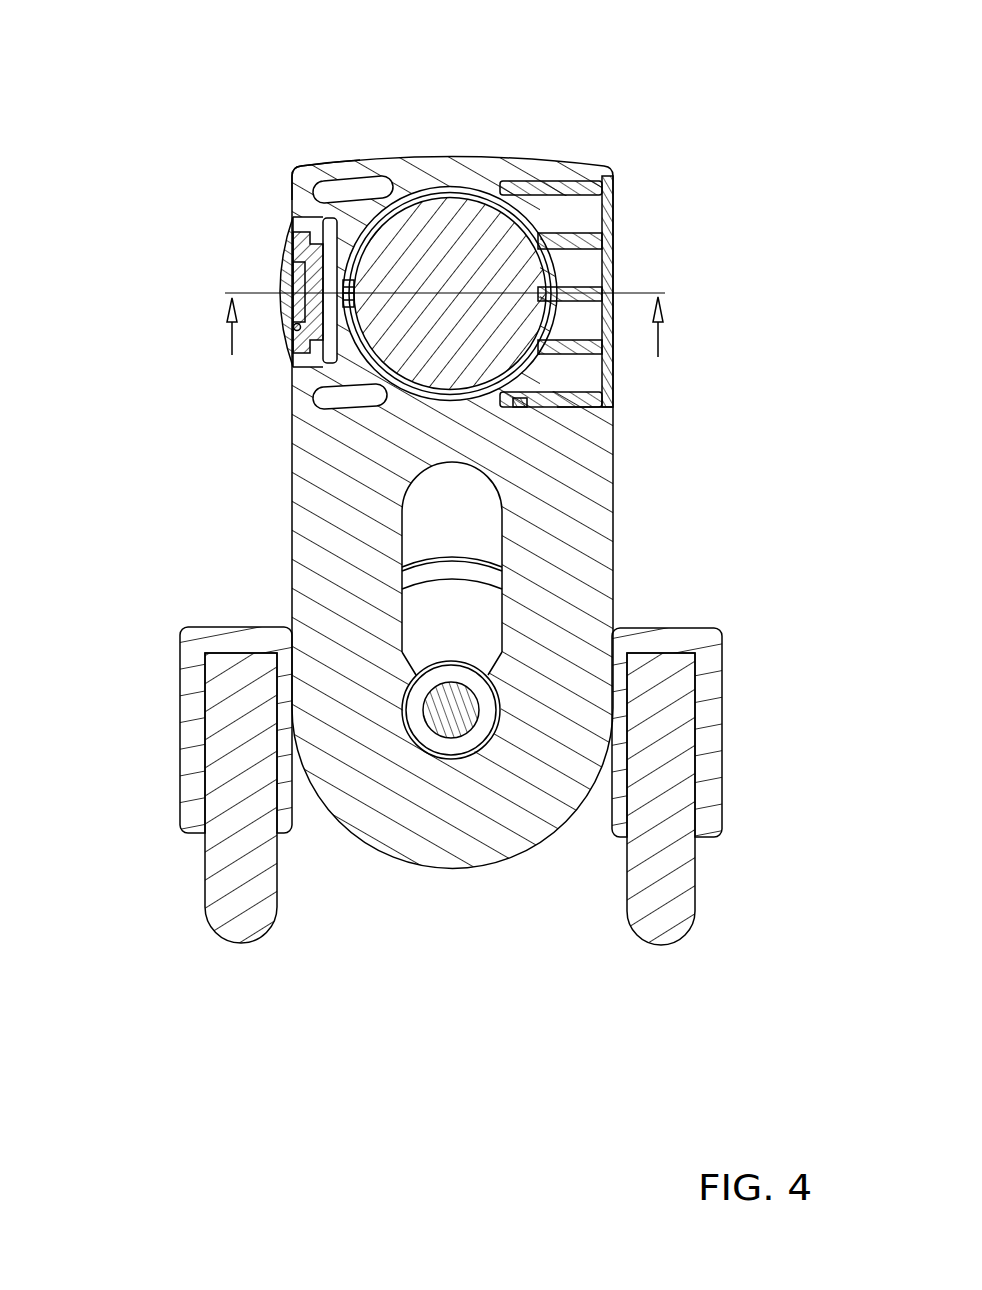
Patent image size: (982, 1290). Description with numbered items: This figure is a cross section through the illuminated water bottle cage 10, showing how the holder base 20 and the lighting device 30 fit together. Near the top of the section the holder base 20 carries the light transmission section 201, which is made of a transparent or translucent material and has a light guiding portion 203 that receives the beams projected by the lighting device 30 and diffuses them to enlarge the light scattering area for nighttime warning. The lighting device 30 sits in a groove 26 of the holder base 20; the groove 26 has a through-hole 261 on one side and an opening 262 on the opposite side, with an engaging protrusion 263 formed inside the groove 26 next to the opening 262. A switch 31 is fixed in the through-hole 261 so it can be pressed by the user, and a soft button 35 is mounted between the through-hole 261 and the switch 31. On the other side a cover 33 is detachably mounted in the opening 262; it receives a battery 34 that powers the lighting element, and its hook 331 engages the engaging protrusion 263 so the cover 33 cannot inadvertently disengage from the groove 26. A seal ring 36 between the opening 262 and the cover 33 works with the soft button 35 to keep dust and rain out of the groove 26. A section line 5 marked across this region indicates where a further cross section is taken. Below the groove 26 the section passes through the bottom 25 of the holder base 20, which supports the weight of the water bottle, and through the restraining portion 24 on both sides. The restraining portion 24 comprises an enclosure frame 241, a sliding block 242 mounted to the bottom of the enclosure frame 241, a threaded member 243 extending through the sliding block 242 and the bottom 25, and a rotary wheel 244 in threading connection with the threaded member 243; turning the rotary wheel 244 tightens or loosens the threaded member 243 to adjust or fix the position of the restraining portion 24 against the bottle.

The illuminated water bottle cage 10 is at (283, 103).
The holder base 20 is at (162, 688).
The restraining portion 24 is at (632, 948).
The bottom 25 is at (303, 552).
The groove 26 is at (601, 183).
The lighting device 30 is at (648, 190).
The switch 31 is at (310, 282).
The cover 33 is at (607, 268).
The battery 34 is at (432, 212).
The soft button 35 is at (288, 283).
The seal ring 36 is at (519, 185).
The section line 5- 5 is at (444, 327).
The light transmission section 201 is at (313, 170).
The light guiding portion 203 is at (387, 842).
The enclosure frame 241 is at (683, 917).
The sliding block 242 is at (710, 712).
The threaded member 243 is at (452, 730).
The rotary wheel 244 is at (470, 623).
The through-hole 261 is at (296, 330).
The opening 262 is at (612, 410).
The engaging protrusion 263 is at (612, 400).
The hook 331 is at (612, 380).